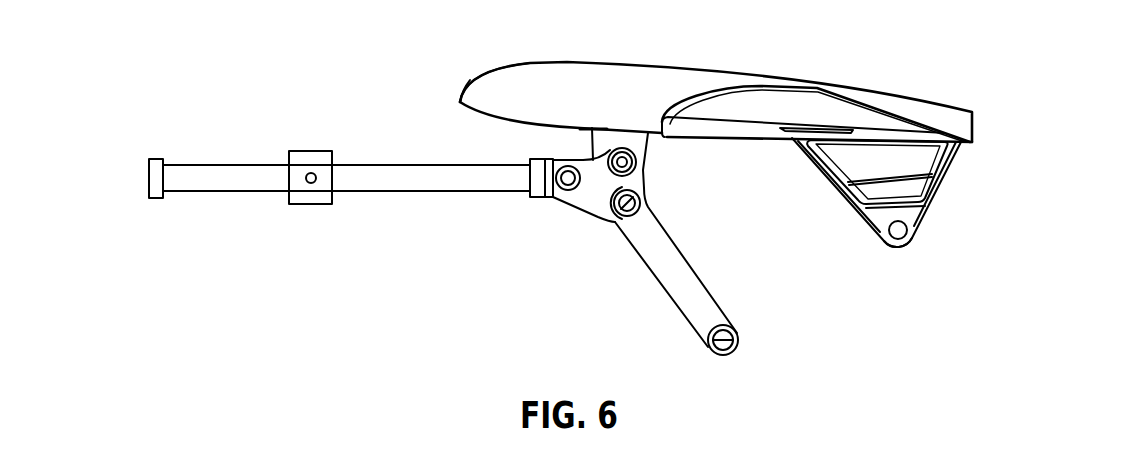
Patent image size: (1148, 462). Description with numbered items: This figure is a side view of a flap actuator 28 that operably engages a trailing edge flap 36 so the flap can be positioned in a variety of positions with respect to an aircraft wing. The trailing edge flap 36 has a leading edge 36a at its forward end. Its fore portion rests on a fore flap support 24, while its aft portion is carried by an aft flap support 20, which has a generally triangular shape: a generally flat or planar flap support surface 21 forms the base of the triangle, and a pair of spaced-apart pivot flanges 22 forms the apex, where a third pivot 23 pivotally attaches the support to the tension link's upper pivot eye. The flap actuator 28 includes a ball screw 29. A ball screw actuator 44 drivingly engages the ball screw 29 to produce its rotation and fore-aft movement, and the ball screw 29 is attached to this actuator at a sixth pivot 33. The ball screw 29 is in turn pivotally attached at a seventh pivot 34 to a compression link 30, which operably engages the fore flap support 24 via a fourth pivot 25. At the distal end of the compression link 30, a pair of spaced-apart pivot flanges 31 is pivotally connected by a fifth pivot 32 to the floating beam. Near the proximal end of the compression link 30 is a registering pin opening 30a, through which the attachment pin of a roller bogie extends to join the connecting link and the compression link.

The aft flap support 20 is at (836, 205).
The flap support surface 21 is at (893, 137).
The pivot flanges 22 is at (900, 247).
The third pivot 23 is at (910, 240).
The fore flap support 24 is at (655, 138).
The fourth pivot 25 is at (609, 153).
The flap actuator 28 is at (388, 98).
The ball screw 29 is at (383, 180).
The compression link 30 is at (682, 287).
The registering pin opening 30a is at (617, 222).
The pivot flanges 31 is at (712, 350).
The fifth pivot 32 is at (735, 352).
The sixth pivot 33 is at (311, 172).
The seventh pivot 34 is at (530, 180).
The trailing edge flap 36 is at (723, 73).
The leading edge 36a is at (460, 103).
The ball screw actuator 44 is at (310, 198).